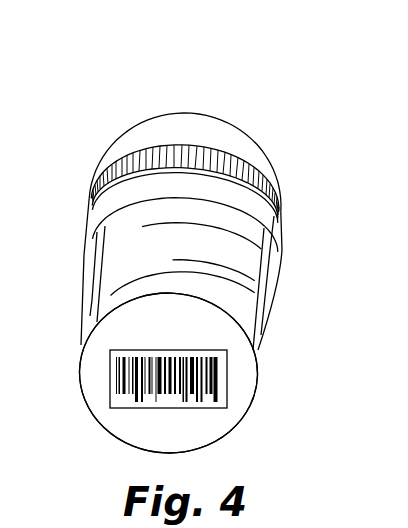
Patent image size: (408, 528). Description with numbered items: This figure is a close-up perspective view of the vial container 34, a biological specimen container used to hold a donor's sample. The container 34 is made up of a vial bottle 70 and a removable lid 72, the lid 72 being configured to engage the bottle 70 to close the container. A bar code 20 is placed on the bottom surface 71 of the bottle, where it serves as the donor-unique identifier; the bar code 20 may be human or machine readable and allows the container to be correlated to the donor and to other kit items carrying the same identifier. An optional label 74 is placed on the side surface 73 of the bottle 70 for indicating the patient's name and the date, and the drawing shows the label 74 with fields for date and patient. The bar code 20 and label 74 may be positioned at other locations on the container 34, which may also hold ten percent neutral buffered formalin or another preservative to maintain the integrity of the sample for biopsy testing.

The vial container 34 is at (290, 102).
The removable lid 72 is at (100, 158).
The side surface 73 is at (90, 318).
The label 74 is at (246, 228).
The vial bottle 70 is at (263, 333).
The bottom surface 71 is at (204, 423).
The bar code 20 is at (134, 408).